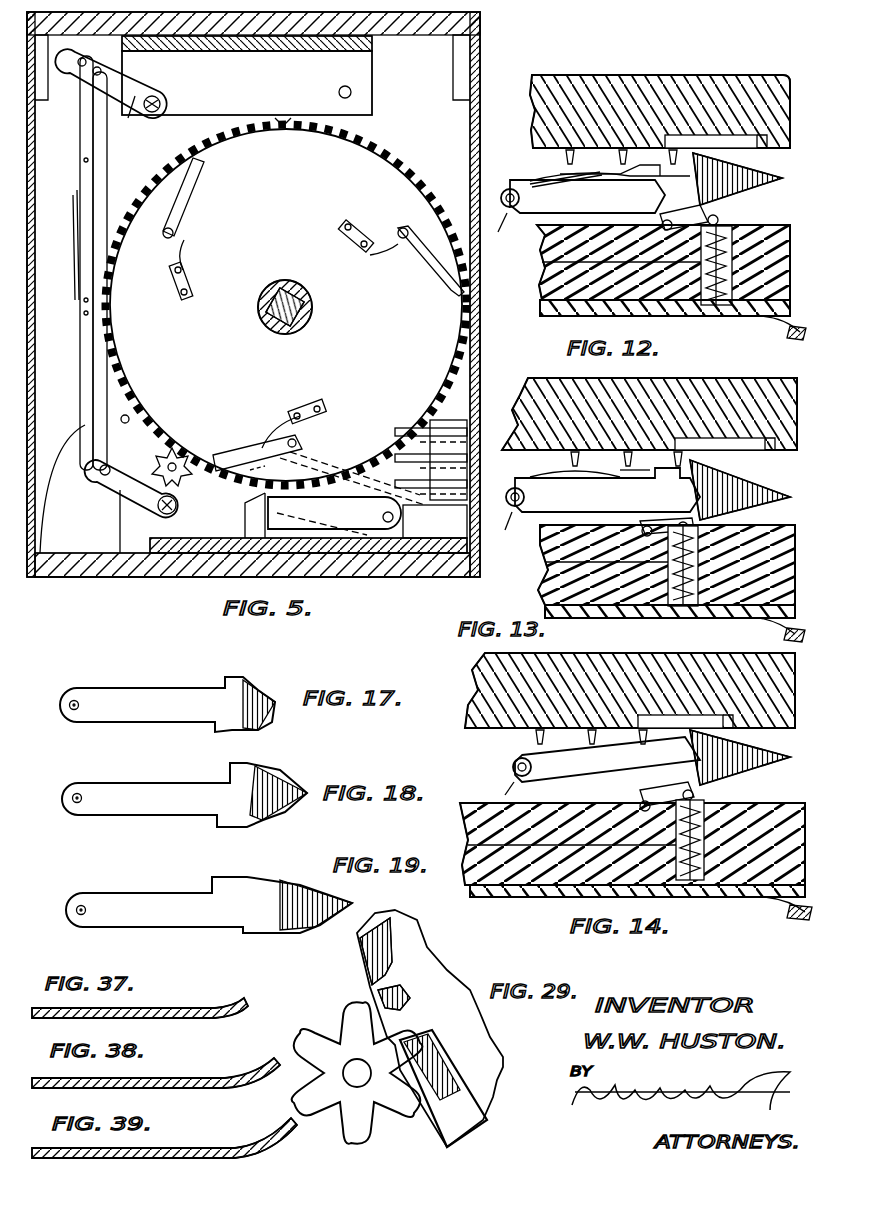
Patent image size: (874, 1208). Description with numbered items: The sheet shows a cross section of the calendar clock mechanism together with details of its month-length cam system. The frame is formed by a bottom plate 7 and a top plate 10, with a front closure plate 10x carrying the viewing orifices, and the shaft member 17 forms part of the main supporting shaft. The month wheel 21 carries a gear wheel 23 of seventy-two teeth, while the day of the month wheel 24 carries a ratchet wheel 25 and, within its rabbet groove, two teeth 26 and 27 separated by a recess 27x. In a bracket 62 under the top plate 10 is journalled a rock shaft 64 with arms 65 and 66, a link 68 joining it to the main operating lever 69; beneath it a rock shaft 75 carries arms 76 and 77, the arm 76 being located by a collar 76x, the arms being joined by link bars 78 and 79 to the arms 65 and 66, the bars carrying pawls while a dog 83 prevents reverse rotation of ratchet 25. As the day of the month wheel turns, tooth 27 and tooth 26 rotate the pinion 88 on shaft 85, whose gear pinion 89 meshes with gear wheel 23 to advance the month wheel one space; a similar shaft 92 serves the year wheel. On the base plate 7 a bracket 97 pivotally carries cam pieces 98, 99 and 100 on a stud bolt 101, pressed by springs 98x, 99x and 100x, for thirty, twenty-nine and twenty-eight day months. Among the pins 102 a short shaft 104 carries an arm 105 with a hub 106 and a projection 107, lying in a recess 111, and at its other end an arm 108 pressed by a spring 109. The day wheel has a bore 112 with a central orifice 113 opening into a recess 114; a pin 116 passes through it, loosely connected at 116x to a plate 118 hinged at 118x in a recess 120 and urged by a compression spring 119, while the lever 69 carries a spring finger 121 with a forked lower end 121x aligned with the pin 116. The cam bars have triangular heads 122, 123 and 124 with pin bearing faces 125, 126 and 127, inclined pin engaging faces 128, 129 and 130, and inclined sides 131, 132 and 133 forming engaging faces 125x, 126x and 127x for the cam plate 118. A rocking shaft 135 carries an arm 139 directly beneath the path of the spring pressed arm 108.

In FIG. 5, the bottom plate 7 is at (85, 565).
In FIG. 5, the top plate 10 is at (310, 22).
In FIG. 12, the front closure plate 10x is at (513, 335).
In FIG. 5, the shaft member 17 is at (312, 307).
In FIG. 5, the month wheel 21 is at (372, 142).
In FIG. 12, the month wheel 21 is at (640, 76).
In FIG. 13, the month wheel 21 is at (740, 400).
In FIG. 14, the month wheel 21 is at (625, 665).
In FIG. 5, the gear wheel 23 is at (286, 305).
In FIG. 12, the day of the month wheel 24 is at (550, 316).
In FIG. 13, the day of the month wheel 24 is at (540, 589).
In FIG. 14, the day of the month wheel 24 is at (480, 835).
In FIG. 19, the day of the month wheel 24 is at (427, 837).
In FIG. 29, the day of the month wheel 24 is at (470, 1036).
In FIG. 12, the ratchet wheel 25 is at (698, 316).
In FIG. 13, the ratchet wheel 25 is at (590, 618).
In FIG. 14, the ratchet wheel 25 is at (690, 715).
In FIG. 29, the tooth 26 is at (380, 972).
In FIG. 29, the tooth 27 is at (398, 1028).
In FIG. 29, the recess 27x is at (405, 990).
In FIG. 5, the bracket 62 is at (238, 92).
In FIG. 5, the rock shaft 64 is at (155, 98).
In FIG. 5, the rearwardly directed arm 65 is at (129, 120).
In FIG. 5, the rearwardly directed arm 66 is at (76, 70).
In FIG. 5, the link 68 is at (232, 118).
In FIG. 12, the main operating lever 69 is at (790, 336).
In FIG. 13, the main operating lever 69 is at (790, 636).
In FIG. 14, the main operating lever 69 is at (800, 924).
In FIG. 5, the rock shaft 75 is at (176, 506).
In FIG. 5, the arm 76 is at (122, 500).
In FIG. 5, the link support 76x is at (168, 514).
In FIG. 5, the arm 77 is at (90, 470).
In FIG. 5, the link bar 78 is at (80, 332).
In FIG. 5, the link bar 79 is at (82, 405).
In FIG. 5, the dog 83 is at (285, 118).
In FIG. 5, the shaft 85 is at (180, 450).
In FIG. 29, the shaft 85 is at (355, 1082).
In FIG. 29, the pinion 88 is at (300, 1045).
In FIG. 5, the gear pinion 89 is at (205, 448).
In FIG. 5, the shaft 92 is at (128, 412).
In FIG. 5, the bracket 97 is at (240, 545).
In FIG. 12, the cam piece 98 is at (530, 195).
In FIG. 13, the cam piece 98 is at (550, 495).
In FIG. 14, the cam piece 98 is at (512, 767).
In FIG. 17, the cam piece 98 is at (120, 690).
In FIG. 37, the cam piece 98 is at (135, 1008).
In FIG. 5, the spring 98x is at (410, 432).
In FIG. 12, the spring 98x is at (555, 190).
In FIG. 12, the cam piece 99 is at (600, 118).
In FIG. 18, the cam piece 99 is at (105, 790).
In FIG. 38, the cam piece 99 is at (150, 1080).
In FIG. 5, the spring 99x is at (405, 458).
In FIG. 12, the spring 99x is at (566, 170).
In FIG. 12, the cam piece 100 is at (640, 118).
In FIG. 19, the cam piece 100 is at (120, 920).
In FIG. 39, the cam piece 100 is at (158, 1150).
In FIG. 5, the spring 100x is at (400, 484).
In FIG. 12, the spring 100x is at (570, 112).
In FIG. 12, the stud bolt 101 is at (498, 214).
In FIG. 13, the stud bolt 101 is at (508, 521).
In FIG. 14, the stud bolt 101 is at (501, 781).
In FIG. 12, the pin 102 is at (540, 125).
In FIG. 13, the pin 102 is at (575, 440).
In FIG. 14, the pin 102 is at (538, 745).
In FIG. 5, the short shaft 104 is at (180, 245).
In FIG. 12, the arm 105 is at (760, 100).
In FIG. 13, the arm 105 is at (760, 400).
In FIG. 14, the arm 105 is at (640, 750).
In FIG. 12, the hub 106 is at (680, 150).
In FIG. 13, the hub 106 is at (678, 430).
In FIG. 14, the hub 106 is at (680, 745).
In FIG. 12, the projection 107 is at (765, 150).
In FIG. 13, the projection 107 is at (770, 456).
In FIG. 14, the projection 107 is at (780, 728).
In FIG. 5, the arm 108 is at (188, 190).
In FIG. 5, the spring 109 is at (190, 250).
In FIG. 12, the recess 111 is at (735, 135).
In FIG. 13, the recess 111 is at (715, 438).
In FIG. 14, the recess 111 is at (672, 715).
In FIG. 12, the bore 112 is at (730, 232).
In FIG. 13, the bore 112 is at (700, 612).
In FIG. 14, the bore 112 is at (702, 890).
In FIG. 12, the central orifice 113 is at (722, 312).
In FIG. 13, the central orifice 113 is at (670, 618).
In FIG. 14, the central orifice 113 is at (695, 900).
In FIG. 13, the recess 114 is at (680, 410).
In FIG. 14, the recess 114 is at (685, 900).
In FIG. 12, the pin 116 is at (540, 272).
In FIG. 13, the pin 116 is at (540, 565).
In FIG. 14, the pin 116 is at (735, 880).
In FIG. 12, the connection 116x is at (807, 301).
In FIG. 13, the connection 116x is at (807, 574).
In FIG. 14, the connection 116x is at (750, 784).
In FIG. 12, the plate 118 is at (665, 212).
In FIG. 13, the plate 118 is at (672, 515).
In FIG. 14, the plate 118 is at (650, 790).
In FIG. 12, the hinge 118x is at (662, 220).
In FIG. 13, the hinge 118x is at (645, 527).
In FIG. 14, the hinge 118x is at (640, 802).
In FIG. 12, the compression spring 119 is at (622, 306).
In FIG. 13, the compression spring 119 is at (612, 618).
In FIG. 14, the compression spring 119 is at (785, 822).
In FIG. 12, the recess 120 is at (720, 216).
In FIG. 13, the recess 120 is at (690, 522).
In FIG. 14, the recess 120 is at (660, 810).
In FIG. 12, the spring finger 121 is at (786, 326).
In FIG. 13, the spring finger 121 is at (788, 627).
In FIG. 14, the spring finger 121 is at (790, 906).
In FIG. 13, the forked lower end 121x is at (807, 596).
In FIG. 14, the forked lower end 121x is at (770, 903).
In FIG. 12, the head 122 is at (697, 205).
In FIG. 13, the head 122 is at (690, 506).
In FIG. 14, the head 122 is at (700, 766).
In FIG. 17, the head 122 is at (240, 700).
In FIG. 37, the head 122 is at (235, 1003).
In FIG. 12, the head 123 is at (712, 150).
In FIG. 13, the head 123 is at (748, 480).
In FIG. 14, the head 123 is at (770, 765).
In FIG. 18, the head 123 is at (262, 822).
In FIG. 38, the head 123 is at (248, 1068).
In FIG. 12, the head 124 is at (745, 150).
In FIG. 13, the head 124 is at (780, 500).
In FIG. 14, the head 124 is at (740, 757).
In FIG. 19, the head 124 is at (340, 905).
In FIG. 39, the head 124 is at (268, 1138).
In FIG. 12, the pin bearing face 125 is at (678, 150).
In FIG. 13, the pin bearing face 125 is at (626, 430).
In FIG. 17, the pin bearing face 125 is at (238, 676).
In FIG. 17, the engaging face 125x is at (222, 732).
In FIG. 12, the pin bearing face 126 is at (655, 170).
In FIG. 18, the pin bearing face 126 is at (232, 764).
In FIG. 18, the engaging face 126x is at (235, 828).
In FIG. 12, the pin bearing face 127 is at (670, 160).
In FIG. 13, the pin bearing face 127 is at (621, 462).
In FIG. 14, the pin bearing face 127 is at (655, 785).
In FIG. 19, the pin bearing face 127 is at (212, 876).
In FIG. 19, the engaging face 127x is at (255, 935).
In FIG. 12, the inclined pin engaging face 128 is at (775, 172).
In FIG. 13, the inclined pin engaging face 128 is at (683, 513).
In FIG. 14, the inclined pin engaging face 128 is at (790, 705).
In FIG. 17, the inclined pin engaging face 128 is at (268, 695).
In FIG. 12, the inclined pin engaging face 129 is at (786, 104).
In FIG. 13, the inclined pin engaging face 129 is at (786, 438).
In FIG. 14, the inclined pin engaging face 129 is at (809, 748).
In FIG. 18, the inclined pin engaging face 129 is at (280, 775).
In FIG. 12, the inclined pin engaging face 130 is at (775, 125).
In FIG. 13, the inclined pin engaging face 130 is at (750, 496).
In FIG. 14, the inclined pin engaging face 130 is at (735, 715).
In FIG. 19, the inclined pin engaging face 130 is at (292, 886).
In FIG. 17, the inclined side 131 is at (250, 728).
In FIG. 18, the inclined side 132 is at (278, 812).
In FIG. 19, the inclined side 133 is at (300, 935).
In FIG. 5, the rocking shaft 135 is at (396, 517).
In FIG. 5, the arm 139 is at (350, 540).